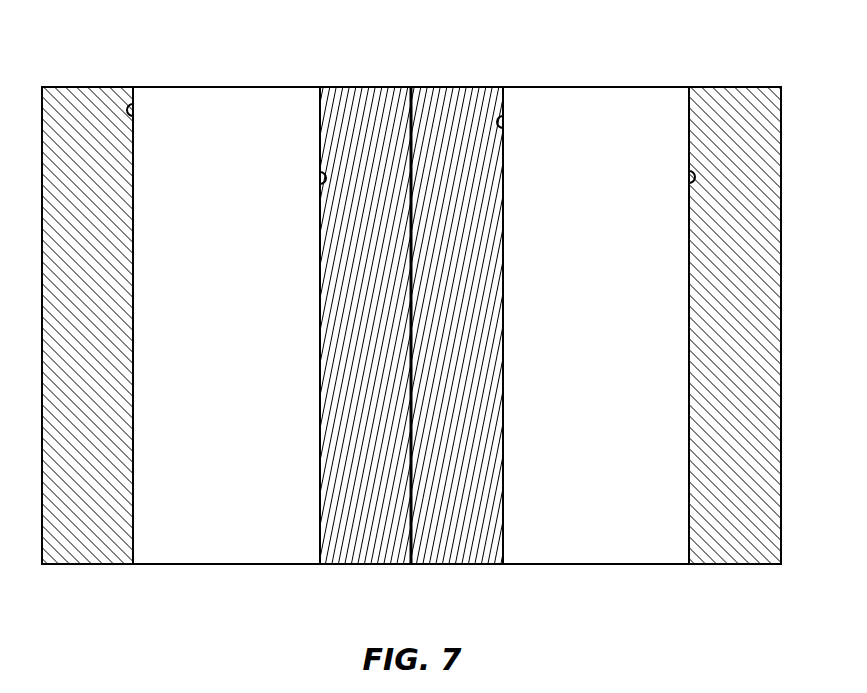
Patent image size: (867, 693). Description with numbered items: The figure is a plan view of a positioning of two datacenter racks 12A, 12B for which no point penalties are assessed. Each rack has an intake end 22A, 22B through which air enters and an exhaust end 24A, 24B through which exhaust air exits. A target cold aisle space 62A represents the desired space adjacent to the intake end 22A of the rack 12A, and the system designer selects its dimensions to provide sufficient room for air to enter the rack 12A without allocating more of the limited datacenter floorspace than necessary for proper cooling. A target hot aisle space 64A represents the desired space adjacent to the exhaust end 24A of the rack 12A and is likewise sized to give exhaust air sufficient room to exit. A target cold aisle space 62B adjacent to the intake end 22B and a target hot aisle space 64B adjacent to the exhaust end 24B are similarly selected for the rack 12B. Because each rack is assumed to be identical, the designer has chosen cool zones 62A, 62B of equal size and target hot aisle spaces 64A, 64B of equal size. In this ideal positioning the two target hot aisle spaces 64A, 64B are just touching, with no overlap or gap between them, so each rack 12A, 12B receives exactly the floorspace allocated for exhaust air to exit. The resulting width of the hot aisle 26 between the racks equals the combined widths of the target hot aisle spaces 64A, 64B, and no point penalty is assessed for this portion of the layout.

The rack 12A is at (227, 87).
The rack 12B is at (597, 87).
The intake end 22A is at (133, 117).
The intake end 22B is at (689, 185).
The exhaust end 24A is at (320, 186).
The exhaust end 24B is at (503, 130).
The hot aisle 26 is at (317, 573).
The target cold aisle space 62A is at (43, 80).
The target cold aisle space 62B is at (689, 80).
The target hot aisle space 64A is at (411, 80).
The target hot aisle space 64B is at (411, 80).